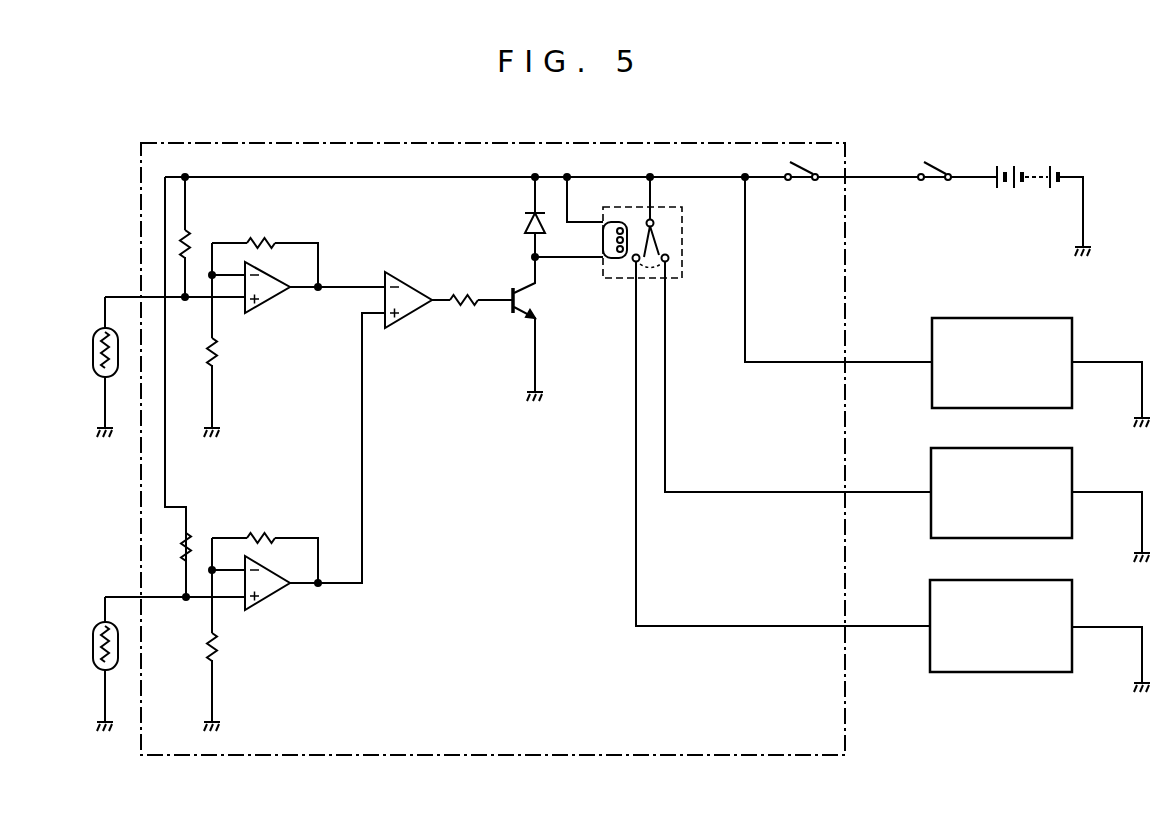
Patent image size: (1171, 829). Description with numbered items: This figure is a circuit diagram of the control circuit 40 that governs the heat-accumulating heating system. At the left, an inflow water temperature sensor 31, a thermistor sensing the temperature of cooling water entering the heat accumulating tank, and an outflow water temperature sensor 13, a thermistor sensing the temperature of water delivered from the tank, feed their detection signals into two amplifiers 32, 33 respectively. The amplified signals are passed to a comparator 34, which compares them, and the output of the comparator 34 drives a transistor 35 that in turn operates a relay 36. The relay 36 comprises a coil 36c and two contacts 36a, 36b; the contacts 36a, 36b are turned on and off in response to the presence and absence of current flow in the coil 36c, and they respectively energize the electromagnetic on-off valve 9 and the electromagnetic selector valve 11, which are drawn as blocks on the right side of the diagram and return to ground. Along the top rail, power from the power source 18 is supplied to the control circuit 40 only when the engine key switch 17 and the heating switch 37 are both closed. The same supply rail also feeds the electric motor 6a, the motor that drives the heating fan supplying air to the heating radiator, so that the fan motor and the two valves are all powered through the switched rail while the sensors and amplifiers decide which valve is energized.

The control circuit 40 is at (183, 143).
The inflow water temperature sensor 31 is at (93, 346).
The outflow water temperature sensor 13 is at (93, 651).
The amplifier 32 is at (280, 299).
The amplifier 33 is at (279, 597).
The comparator 34 is at (419, 315).
The transistor 35 is at (537, 301).
The relay 36 is at (733, 401).
The contact 36a is at (633, 330).
The contact 36b is at (690, 320).
The coil 36c is at (608, 232).
The heating switch 37 is at (801, 184).
The engine key switch 17 is at (936, 184).
The power source 18 is at (1033, 184).
The electric motor 6a is at (951, 318).
The electromagnetic selector valve 11 is at (950, 448).
The electromagnetic on-off valve 9 is at (945, 580).